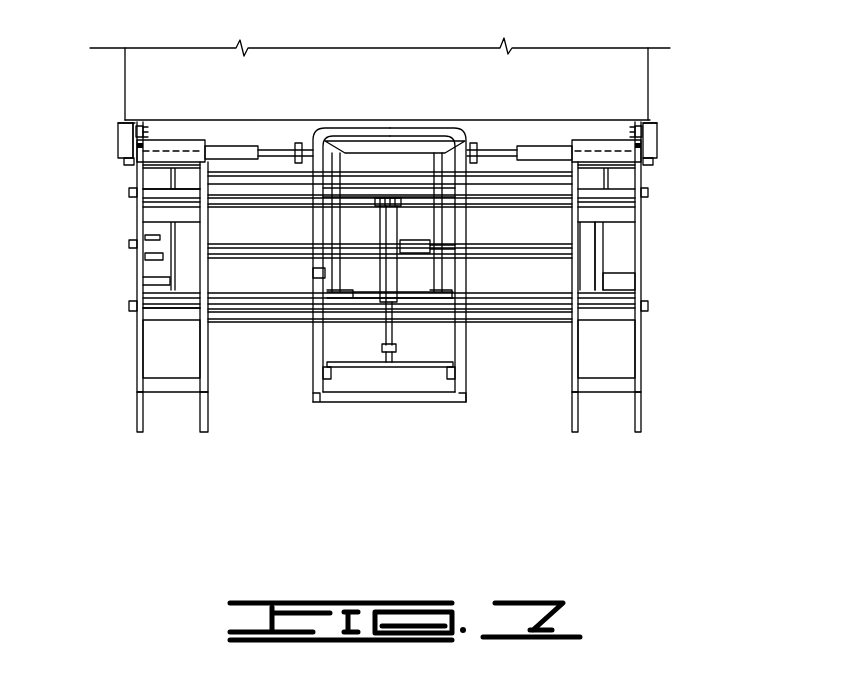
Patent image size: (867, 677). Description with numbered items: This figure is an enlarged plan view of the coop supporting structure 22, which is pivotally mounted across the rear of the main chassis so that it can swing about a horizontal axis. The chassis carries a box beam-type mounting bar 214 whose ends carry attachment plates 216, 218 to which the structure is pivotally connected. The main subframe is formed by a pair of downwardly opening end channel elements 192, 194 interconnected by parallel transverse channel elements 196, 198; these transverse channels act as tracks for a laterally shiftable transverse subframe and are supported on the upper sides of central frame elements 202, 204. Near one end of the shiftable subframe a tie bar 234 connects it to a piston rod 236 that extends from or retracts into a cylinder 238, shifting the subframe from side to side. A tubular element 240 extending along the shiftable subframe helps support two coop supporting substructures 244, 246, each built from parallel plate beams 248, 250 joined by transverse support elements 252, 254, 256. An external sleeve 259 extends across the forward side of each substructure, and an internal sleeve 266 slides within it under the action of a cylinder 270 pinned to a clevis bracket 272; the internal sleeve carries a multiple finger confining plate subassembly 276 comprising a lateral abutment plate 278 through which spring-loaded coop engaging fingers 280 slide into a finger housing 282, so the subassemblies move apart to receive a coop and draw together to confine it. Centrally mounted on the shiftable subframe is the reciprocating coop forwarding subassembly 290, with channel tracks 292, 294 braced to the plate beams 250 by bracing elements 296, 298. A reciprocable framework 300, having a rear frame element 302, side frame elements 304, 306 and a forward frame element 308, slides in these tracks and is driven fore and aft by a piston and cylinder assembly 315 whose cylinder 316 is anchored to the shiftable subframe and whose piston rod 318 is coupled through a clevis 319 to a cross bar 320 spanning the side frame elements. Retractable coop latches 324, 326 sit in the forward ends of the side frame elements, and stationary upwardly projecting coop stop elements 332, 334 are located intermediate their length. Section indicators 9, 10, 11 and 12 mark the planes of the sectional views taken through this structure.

The coop supporting structure 22 is at (660, 303).
The end channel element 192 is at (152, 270).
The end channel element 194 is at (622, 237).
The transverse channel element 196 is at (157, 192).
The transverse channel element 198 is at (237, 305).
The central frame element 202 is at (338, 213).
The central frame element 204 is at (440, 222).
The mounting bar 214 is at (537, 127).
The attachment plate 216 is at (127, 163).
The attachment plate 218 is at (653, 160).
The tie bar 234 is at (590, 275).
The piston rod 236 is at (500, 248).
The cylinder 238 is at (232, 247).
The tubular element 240 is at (227, 197).
The coop supporting substructure 244 is at (135, 350).
The coop supporting substructure 246 is at (645, 373).
The plate beam 248 is at (135, 420).
The plate beam 250 is at (200, 418).
The transverse support element 252 is at (180, 383).
The transverse support element 254 is at (158, 308).
The transverse support element 256 is at (157, 213).
The external sleeve 259 is at (167, 152).
The internal sleeve 266 is at (528, 147).
The cylinder 270 is at (283, 112).
The clevis bracket 272 is at (297, 143).
The multiple finger confining plate subassembly 276 is at (118, 142).
The lateral abutment plate 278 is at (133, 120).
The coop engaging finger 280 is at (143, 133).
The finger housing 282 is at (658, 147).
The reciprocating coop forwarding subassembly 290 is at (390, 259).
The channel track 292 is at (313, 337).
The channel track 294 is at (467, 343).
The bracing element 296 is at (238, 170).
The bracing element 298 is at (485, 173).
The reciprocable framework 300 is at (350, 405).
The rear frame element 302 is at (408, 398).
The side frame element 304 is at (330, 378).
The side frame element 306 is at (455, 379).
The forward frame element 308 is at (365, 136).
The piston and cylinder assembly 315 is at (367, 227).
The cylinder 316 is at (383, 218).
The piston rod 318 is at (395, 330).
The clevis 319 is at (382, 342).
The cross bar 320 is at (437, 330).
The retractable coop latch 324 is at (312, 137).
The retractable coop latch 326 is at (465, 137).
The coop stop element 332 is at (323, 272).
The coop stop element 334 is at (460, 273).
The section line 9 is at (12, 283).
The section line 10 is at (163, 102).
The section line 11 is at (367, 98).
The section line 12 is at (622, 120).